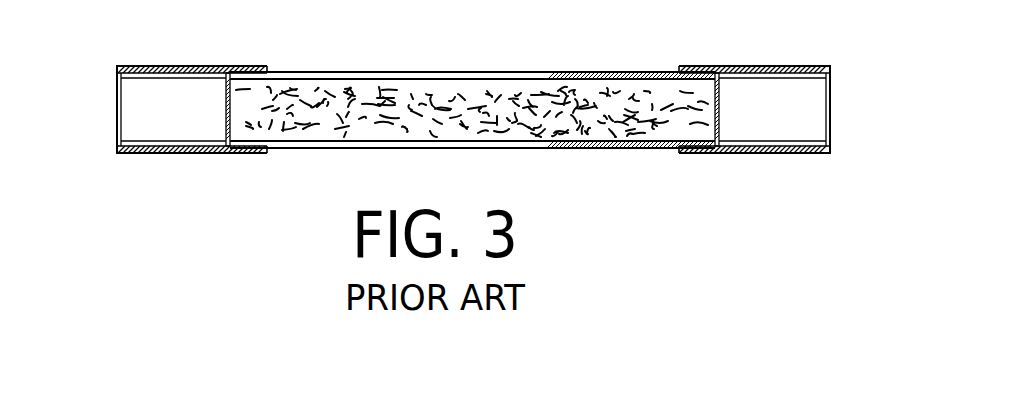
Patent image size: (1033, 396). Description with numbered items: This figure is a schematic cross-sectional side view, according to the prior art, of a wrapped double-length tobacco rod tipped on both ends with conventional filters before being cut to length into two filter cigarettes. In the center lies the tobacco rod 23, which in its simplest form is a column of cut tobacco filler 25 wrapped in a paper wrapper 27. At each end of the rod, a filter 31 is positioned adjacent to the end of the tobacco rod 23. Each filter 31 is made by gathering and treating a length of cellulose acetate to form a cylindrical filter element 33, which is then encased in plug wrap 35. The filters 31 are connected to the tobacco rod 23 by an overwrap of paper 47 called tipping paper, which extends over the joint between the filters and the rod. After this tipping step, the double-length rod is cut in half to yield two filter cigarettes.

The tobacco rod 23 is at (566, 72).
The cut tobacco filler 25 is at (575, 130).
The paper wrapper 27 is at (453, 72).
The filter 31 is at (484, 80).
The filter element 33 is at (128, 104).
The plug wrap 35 is at (133, 141).
The tipping paper 47 is at (738, 66).